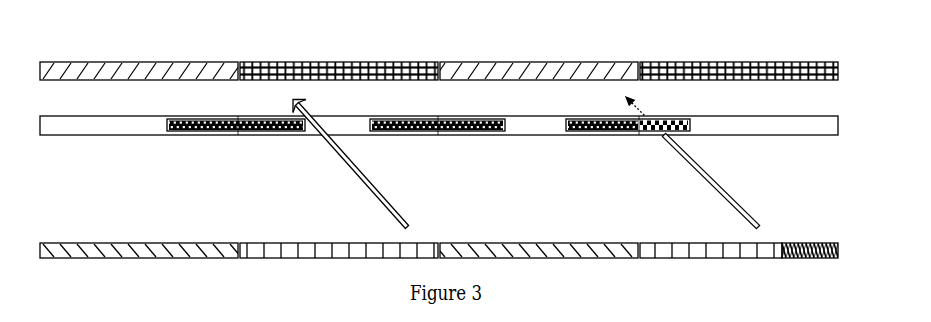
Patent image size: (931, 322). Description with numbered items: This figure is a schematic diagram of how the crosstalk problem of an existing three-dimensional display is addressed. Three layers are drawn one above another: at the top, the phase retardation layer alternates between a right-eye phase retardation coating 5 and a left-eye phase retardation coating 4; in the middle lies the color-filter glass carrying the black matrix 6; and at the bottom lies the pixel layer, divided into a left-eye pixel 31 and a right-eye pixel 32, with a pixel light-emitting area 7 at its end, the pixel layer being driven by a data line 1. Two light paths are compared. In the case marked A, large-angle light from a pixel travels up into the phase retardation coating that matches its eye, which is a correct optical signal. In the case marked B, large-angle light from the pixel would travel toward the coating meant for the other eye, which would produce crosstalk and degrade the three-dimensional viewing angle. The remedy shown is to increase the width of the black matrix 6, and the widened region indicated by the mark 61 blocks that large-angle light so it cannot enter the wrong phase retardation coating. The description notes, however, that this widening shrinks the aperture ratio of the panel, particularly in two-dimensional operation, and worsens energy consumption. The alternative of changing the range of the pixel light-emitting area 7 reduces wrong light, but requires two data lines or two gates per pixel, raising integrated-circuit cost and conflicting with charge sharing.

The data line 1 is at (742, 123).
The left-eye phase retardation coating 4 is at (710, 70).
The right-eye phase retardation coating 5 is at (495, 70).
The black matrix 6 is at (488, 132).
The widened black matrix portion 61 is at (675, 125).
The left-eye pixel 31 is at (410, 248).
The right-eye pixel 32 is at (548, 248).
The pixel light-emitting area 7 is at (810, 241).
The large-angle light case A is at (351, 164).
The large-angle light case B is at (693, 164).